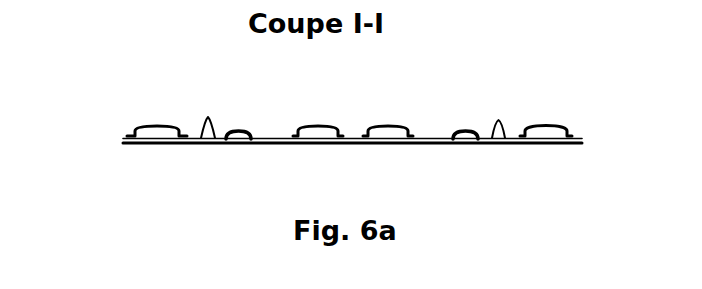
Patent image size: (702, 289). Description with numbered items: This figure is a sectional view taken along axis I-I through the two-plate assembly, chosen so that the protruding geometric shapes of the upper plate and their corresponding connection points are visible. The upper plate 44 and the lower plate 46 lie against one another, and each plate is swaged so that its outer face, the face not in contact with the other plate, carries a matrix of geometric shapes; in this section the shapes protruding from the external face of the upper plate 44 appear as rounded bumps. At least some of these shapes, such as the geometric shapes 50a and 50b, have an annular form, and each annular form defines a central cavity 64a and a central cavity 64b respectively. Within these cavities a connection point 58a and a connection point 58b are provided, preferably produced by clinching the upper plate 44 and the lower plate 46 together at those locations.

The upper plate 44 is at (128, 137).
The lower plate 46 is at (148, 145).
The geometric shape 50a is at (315, 122).
The geometric shape 50b is at (550, 125).
The connection point 58a is at (236, 138).
The connection point 58b is at (462, 138).
The central cavity 64a is at (208, 118).
The central cavity 64b is at (497, 121).